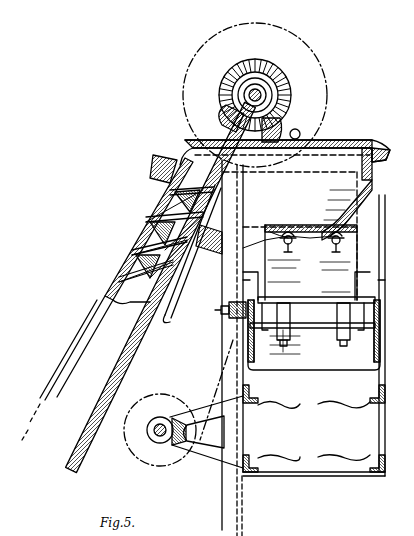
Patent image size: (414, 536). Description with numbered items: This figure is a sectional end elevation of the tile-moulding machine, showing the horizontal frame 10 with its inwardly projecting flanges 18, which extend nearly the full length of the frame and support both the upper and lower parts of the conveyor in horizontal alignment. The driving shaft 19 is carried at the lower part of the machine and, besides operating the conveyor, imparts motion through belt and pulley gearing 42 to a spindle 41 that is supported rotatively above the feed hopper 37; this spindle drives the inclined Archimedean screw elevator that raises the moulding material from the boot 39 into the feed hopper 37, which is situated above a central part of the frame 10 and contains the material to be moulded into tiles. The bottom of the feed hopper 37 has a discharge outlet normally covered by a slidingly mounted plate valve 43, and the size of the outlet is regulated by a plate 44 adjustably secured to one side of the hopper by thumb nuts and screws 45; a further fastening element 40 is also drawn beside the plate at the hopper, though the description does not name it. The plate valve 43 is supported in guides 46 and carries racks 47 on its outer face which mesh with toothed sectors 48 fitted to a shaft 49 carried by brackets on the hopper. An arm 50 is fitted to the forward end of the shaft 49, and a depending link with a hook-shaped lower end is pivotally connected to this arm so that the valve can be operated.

The horizontal frame 10 is at (247, 432).
The inwardly projecting flanges 18 is at (314, 433).
The driving shaft 19 is at (135, 454).
The feed hopper 37 is at (325, 80).
The boot 39 is at (125, 260).
The nut 40 is at (350, 298).
The spindle 41 is at (268, 97).
The belt and pulley gearing 42 is at (186, 108).
The plate valve 43 is at (300, 320).
The plate 44 is at (278, 234).
The thumb nuts and screws 45 is at (309, 230).
The guides 46 is at (240, 286).
The racks 47 is at (284, 355).
The toothed sectors 48 is at (283, 301).
The shaft 49 is at (343, 301).
The arm 50 is at (222, 310).